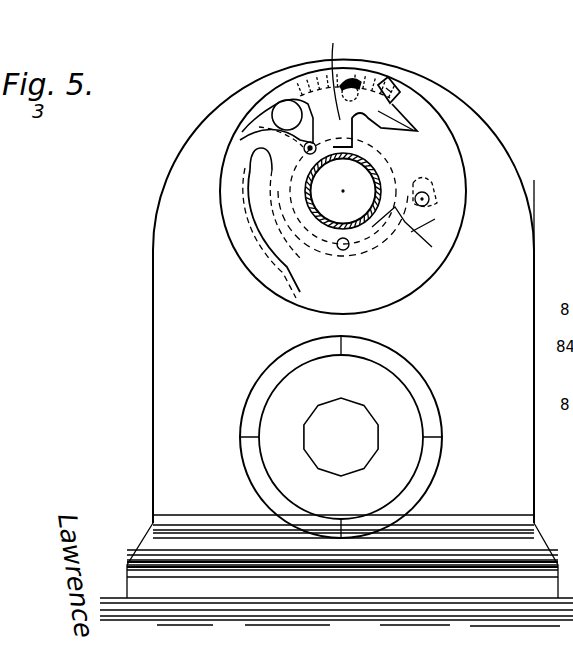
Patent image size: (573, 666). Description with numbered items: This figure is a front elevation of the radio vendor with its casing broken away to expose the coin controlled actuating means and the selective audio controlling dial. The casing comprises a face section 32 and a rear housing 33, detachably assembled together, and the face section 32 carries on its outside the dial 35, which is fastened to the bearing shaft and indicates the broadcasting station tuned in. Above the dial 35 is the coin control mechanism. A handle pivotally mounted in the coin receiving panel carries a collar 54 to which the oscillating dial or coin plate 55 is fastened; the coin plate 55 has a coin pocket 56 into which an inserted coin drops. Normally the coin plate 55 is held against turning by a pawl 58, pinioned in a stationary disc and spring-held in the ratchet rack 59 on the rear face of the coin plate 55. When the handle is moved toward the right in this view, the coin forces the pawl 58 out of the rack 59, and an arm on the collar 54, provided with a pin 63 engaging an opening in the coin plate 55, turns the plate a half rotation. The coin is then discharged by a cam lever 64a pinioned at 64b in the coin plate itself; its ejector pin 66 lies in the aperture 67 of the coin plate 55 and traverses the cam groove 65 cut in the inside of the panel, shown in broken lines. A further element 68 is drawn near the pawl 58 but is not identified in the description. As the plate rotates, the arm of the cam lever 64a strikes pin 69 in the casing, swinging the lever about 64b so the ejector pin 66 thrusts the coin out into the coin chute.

The face section 32 is at (153, 483).
The rear housing 33 is at (512, 206).
The dial 35 is at (393, 398).
The collar 54 is at (378, 171).
The coin plate 55 is at (268, 252).
The coin pocket 56 is at (284, 98).
The pawl 58 is at (397, 81).
The ratchet rack 59 is at (367, 70).
The pin 63 is at (428, 198).
The cam lever 64a is at (324, 71).
The pivot of cam lever 64b is at (352, 70).
The cam groove 65 is at (380, 153).
The ejector pin 66 is at (309, 143).
The aperture 67 is at (304, 144).
The arm 68 is at (385, 117).
The pin 69 is at (350, 245).